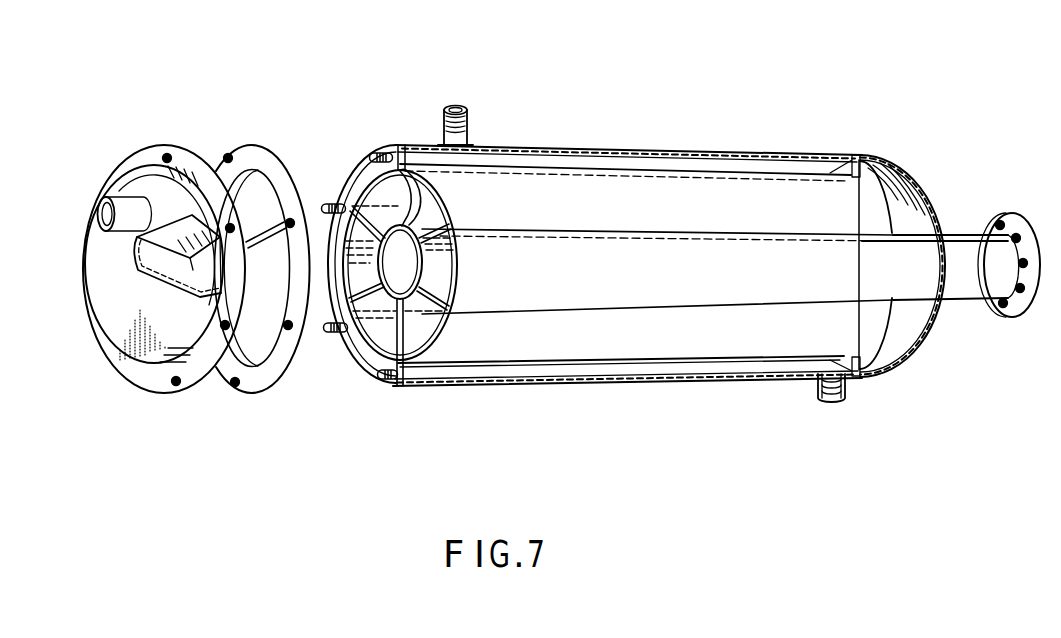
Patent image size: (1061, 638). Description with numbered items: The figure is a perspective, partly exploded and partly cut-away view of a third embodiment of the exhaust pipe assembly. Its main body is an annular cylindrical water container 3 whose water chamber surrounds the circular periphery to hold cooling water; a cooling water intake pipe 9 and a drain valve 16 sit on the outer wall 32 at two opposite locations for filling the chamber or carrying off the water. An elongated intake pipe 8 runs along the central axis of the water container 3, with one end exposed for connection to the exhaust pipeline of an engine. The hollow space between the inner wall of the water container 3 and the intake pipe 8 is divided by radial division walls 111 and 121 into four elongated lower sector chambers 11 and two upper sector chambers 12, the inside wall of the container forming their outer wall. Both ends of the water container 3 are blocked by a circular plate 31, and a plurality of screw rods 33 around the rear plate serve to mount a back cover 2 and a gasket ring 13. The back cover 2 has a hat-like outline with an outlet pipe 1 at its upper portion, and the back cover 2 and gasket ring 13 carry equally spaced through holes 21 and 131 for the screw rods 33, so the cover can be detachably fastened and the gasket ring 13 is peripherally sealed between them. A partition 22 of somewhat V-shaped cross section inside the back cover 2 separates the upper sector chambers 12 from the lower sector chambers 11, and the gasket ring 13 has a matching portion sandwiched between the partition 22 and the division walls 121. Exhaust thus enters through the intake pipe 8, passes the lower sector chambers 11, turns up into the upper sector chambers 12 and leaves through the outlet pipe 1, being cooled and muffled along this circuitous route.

The outlet pipe 1 is at (123, 194).
The back cover 2 is at (187, 163).
The through holes 21 is at (230, 224).
The partition 22 is at (195, 332).
The gasket ring 13 is at (270, 173).
The through holes 131 is at (236, 386).
The water container 3 is at (636, 219).
The circular plate 31 is at (358, 173).
The outer wall 32 is at (703, 150).
The screw rods 33 is at (328, 201).
The lower sector chambers 11 is at (410, 269).
The radial division walls 111 is at (398, 390).
The upper sector chambers 12 is at (635, 190).
The radial division walls 121 is at (376, 224).
The cooling water intake pipe 9 is at (455, 108).
The drain valve 16 is at (833, 400).
The intake pipe 8 is at (962, 253).